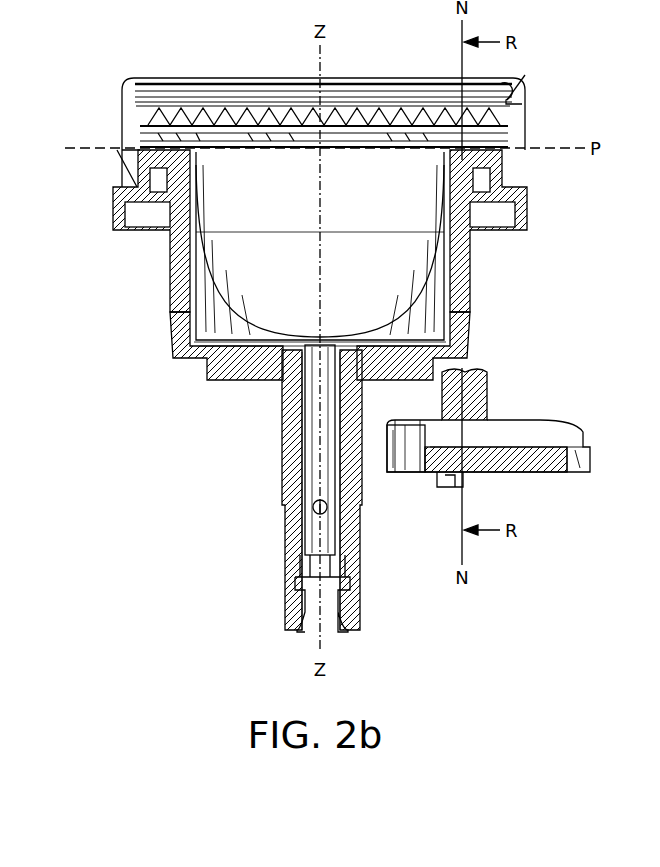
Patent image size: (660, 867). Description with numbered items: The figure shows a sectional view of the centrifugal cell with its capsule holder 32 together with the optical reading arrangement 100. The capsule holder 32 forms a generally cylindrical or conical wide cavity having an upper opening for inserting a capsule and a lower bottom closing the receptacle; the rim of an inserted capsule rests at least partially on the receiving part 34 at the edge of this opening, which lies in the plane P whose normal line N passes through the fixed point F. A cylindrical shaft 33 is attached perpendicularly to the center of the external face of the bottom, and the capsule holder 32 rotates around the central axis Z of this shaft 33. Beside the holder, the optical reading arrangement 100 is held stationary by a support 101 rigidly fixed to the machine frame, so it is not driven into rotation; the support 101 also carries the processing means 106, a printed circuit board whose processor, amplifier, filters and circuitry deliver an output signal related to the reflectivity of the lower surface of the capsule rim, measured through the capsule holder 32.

The capsule holder 32 is at (178, 256).
The cylindrical shaft 33 is at (322, 415).
The receiving part 34 is at (182, 147).
The optical reading arrangement 100 is at (519, 446).
The support 101 is at (405, 470).
The processing means 106 is at (496, 478).